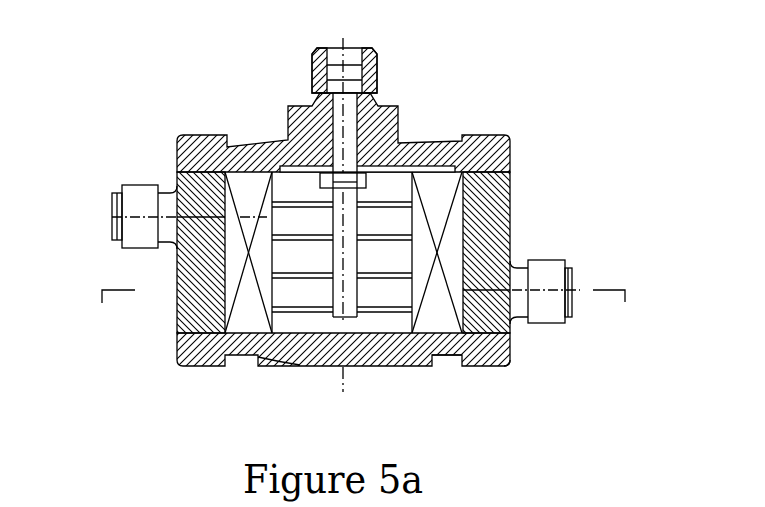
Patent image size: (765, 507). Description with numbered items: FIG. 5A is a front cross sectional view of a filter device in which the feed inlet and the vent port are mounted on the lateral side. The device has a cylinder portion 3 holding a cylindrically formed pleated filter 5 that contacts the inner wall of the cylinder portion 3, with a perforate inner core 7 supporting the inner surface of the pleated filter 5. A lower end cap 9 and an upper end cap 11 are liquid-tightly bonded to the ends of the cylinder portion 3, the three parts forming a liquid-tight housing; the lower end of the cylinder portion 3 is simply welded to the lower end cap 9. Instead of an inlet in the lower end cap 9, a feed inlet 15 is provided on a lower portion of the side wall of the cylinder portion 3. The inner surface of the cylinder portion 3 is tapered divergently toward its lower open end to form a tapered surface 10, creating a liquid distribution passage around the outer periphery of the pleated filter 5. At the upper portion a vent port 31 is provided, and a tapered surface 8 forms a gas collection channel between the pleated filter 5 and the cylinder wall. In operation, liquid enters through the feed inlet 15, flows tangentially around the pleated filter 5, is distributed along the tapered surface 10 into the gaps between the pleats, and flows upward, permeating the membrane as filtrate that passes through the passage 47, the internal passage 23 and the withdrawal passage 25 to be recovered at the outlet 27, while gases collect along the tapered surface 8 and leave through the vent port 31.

The cylinder portion 3 is at (503, 238).
The pleated filter 5 is at (420, 330).
The perforate inner core 7 is at (258, 357).
The tapered surface 8 is at (462, 179).
The lower end cap 9 is at (477, 364).
The tapered surface 10 is at (447, 354).
The upper end cap 11 is at (487, 138).
The feed inlet 15 is at (572, 298).
The internal passage 23 is at (330, 318).
The withdrawal passage 25 is at (348, 120).
The outlet 27 is at (350, 46).
The vent port 31 is at (110, 217).
The passage 47 is at (388, 202).